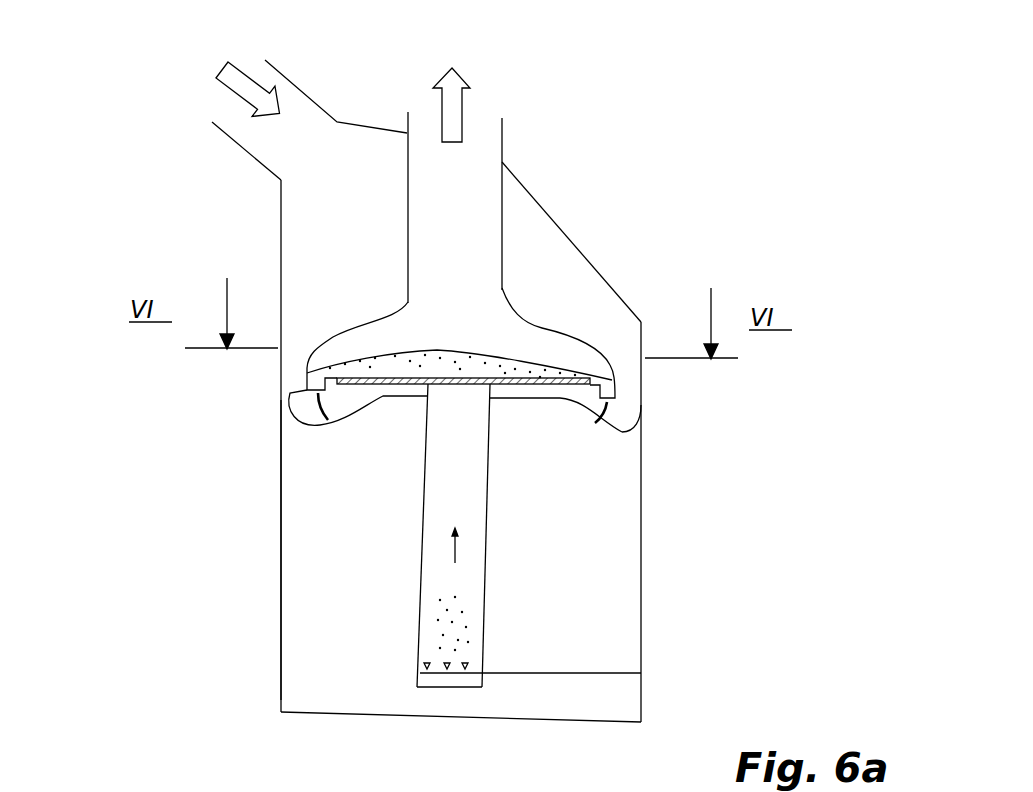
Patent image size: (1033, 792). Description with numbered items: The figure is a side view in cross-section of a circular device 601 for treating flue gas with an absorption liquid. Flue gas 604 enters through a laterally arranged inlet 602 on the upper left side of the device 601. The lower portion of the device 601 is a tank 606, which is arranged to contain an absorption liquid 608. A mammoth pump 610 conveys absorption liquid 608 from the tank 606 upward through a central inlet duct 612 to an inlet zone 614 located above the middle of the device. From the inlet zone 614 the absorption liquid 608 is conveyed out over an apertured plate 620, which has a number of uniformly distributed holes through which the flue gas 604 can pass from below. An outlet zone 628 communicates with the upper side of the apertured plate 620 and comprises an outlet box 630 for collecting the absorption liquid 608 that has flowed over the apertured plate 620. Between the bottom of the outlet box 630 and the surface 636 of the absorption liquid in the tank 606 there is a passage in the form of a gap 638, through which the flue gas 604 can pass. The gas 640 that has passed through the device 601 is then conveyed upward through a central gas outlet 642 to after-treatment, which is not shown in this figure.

The device 601 is at (682, 163).
The inlet 602 is at (315, 99).
The flue gas 604 is at (222, 85).
The tank 606 is at (281, 517).
The absorption liquid 608 is at (313, 605).
The mammoth pump 610 is at (560, 673).
The central inlet duct 612 is at (487, 548).
The inlet zone 614 is at (458, 356).
The apertured plate 620 is at (380, 384).
The outlet zone 628 is at (617, 388).
The outlet box 630 is at (283, 395).
The surface of absorption liquid 636 is at (620, 432).
The gap 638 is at (590, 407).
The gas 640 is at (462, 103).
The central gas outlet 642 is at (503, 145).